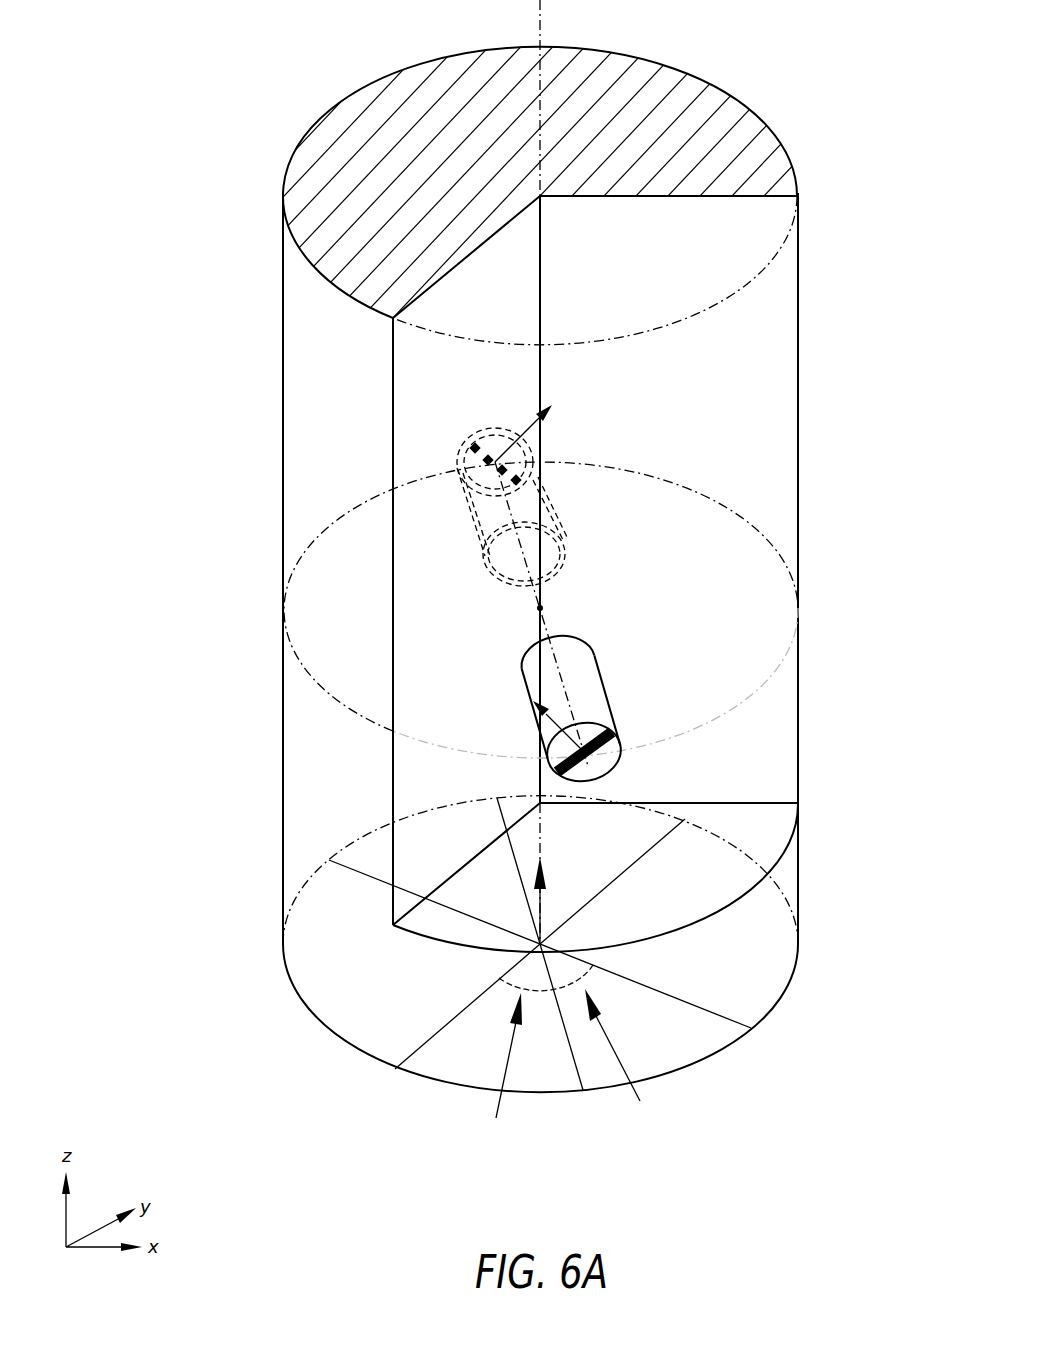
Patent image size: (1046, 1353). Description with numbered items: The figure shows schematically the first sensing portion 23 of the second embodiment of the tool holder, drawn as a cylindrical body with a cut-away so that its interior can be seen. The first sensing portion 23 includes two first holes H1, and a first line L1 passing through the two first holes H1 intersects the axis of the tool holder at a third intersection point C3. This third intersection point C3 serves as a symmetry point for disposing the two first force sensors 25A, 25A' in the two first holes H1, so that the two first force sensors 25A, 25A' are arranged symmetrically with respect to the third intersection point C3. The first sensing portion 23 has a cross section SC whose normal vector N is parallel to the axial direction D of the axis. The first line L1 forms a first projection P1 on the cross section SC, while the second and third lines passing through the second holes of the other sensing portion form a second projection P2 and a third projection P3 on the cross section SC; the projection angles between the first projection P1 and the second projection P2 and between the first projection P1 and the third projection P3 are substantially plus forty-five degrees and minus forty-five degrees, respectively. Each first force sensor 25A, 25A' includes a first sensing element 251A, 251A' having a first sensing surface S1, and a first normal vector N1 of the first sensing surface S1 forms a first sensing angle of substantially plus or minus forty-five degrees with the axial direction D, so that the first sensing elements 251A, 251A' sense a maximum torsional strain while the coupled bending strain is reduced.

The first sensing portion 23 is at (139, 376).
The cross section SC is at (730, 970).
The axial direction D is at (544, 14).
The first projection P1 is at (513, 850).
The second projection P2 is at (462, 1014).
The third projection P3 is at (642, 985).
The normal vector N is at (548, 910).
The first holes H1 is at (500, 521).
The first line L1 is at (546, 623).
The third intersection point C3 is at (536, 609).
The first force sensor 25A' is at (360, 507).
The first sensing element 251A' is at (334, 491).
The first sensing surface S1 is at (480, 455).
The first normal vector N1 is at (538, 418).
The first force sensor 25A is at (721, 722).
The first sensing element 251A is at (740, 752).